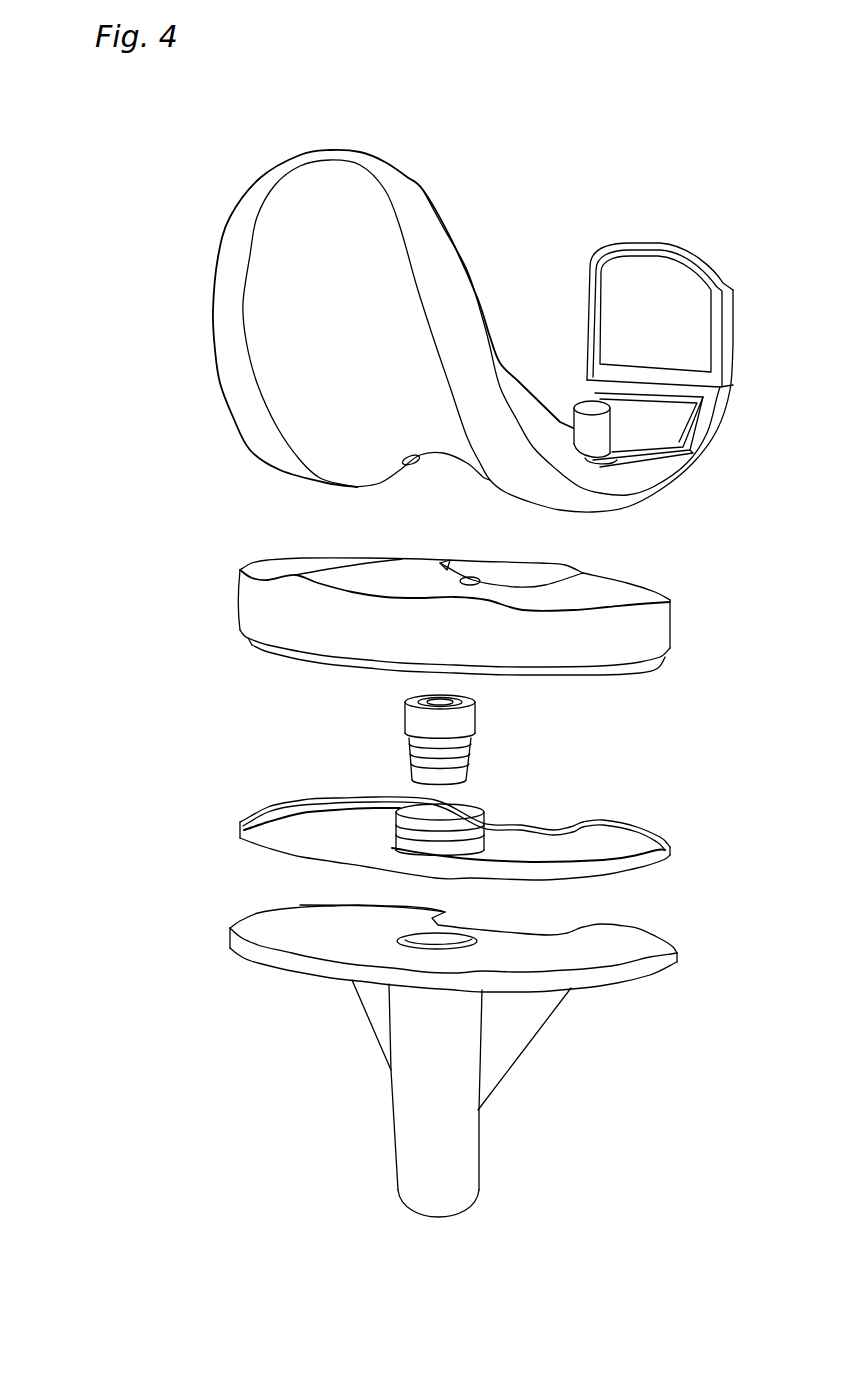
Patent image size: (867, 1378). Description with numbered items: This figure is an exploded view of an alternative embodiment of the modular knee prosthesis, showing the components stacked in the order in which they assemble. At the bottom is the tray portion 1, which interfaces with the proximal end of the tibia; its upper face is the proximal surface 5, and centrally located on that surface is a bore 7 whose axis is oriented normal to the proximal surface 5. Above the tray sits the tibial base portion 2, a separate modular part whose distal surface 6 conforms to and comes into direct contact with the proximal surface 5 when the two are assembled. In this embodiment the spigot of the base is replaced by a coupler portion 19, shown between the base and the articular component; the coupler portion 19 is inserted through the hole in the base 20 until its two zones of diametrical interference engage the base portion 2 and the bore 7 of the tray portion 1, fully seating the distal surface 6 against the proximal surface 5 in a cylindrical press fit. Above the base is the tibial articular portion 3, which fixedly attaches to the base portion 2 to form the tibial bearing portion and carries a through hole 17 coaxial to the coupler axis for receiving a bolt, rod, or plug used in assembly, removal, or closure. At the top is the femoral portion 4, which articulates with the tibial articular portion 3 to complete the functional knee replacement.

The tray portion 1 is at (370, 1089).
The tibial base portion 2 is at (215, 832).
The tibial articular portion 3 is at (217, 604).
The femoral portion 4 is at (178, 349).
The proximal surface 5 is at (615, 938).
The distal surface 6 is at (290, 866).
The bore 7 is at (455, 938).
The through hole 17 is at (472, 577).
The coupler portion 19 is at (372, 736).
The hole in the base 20 is at (462, 802).